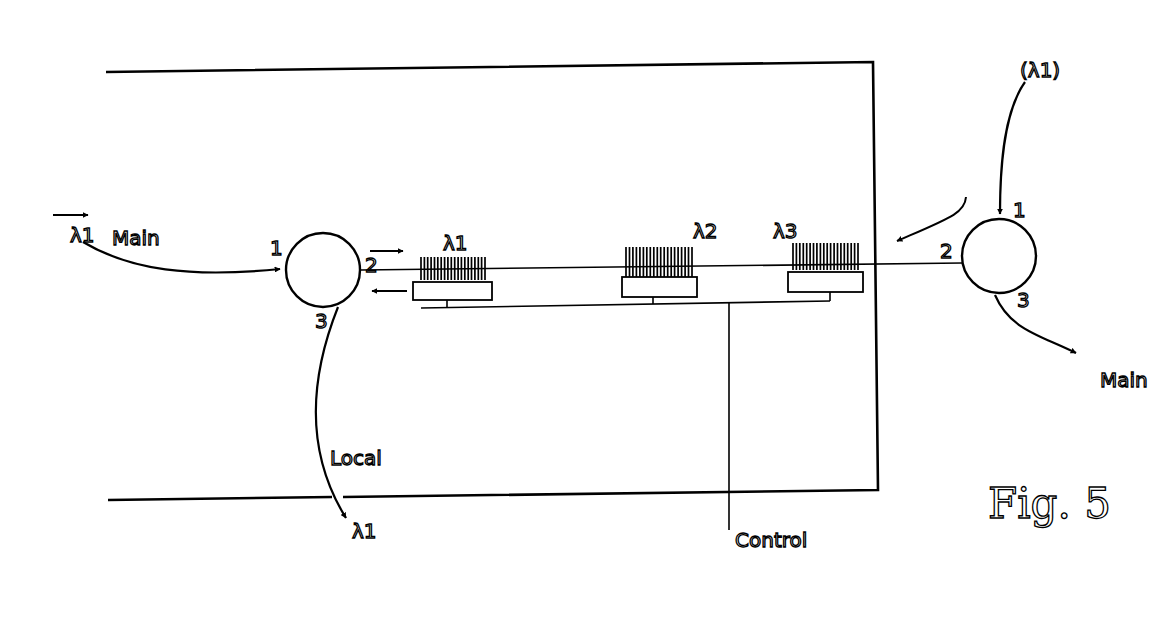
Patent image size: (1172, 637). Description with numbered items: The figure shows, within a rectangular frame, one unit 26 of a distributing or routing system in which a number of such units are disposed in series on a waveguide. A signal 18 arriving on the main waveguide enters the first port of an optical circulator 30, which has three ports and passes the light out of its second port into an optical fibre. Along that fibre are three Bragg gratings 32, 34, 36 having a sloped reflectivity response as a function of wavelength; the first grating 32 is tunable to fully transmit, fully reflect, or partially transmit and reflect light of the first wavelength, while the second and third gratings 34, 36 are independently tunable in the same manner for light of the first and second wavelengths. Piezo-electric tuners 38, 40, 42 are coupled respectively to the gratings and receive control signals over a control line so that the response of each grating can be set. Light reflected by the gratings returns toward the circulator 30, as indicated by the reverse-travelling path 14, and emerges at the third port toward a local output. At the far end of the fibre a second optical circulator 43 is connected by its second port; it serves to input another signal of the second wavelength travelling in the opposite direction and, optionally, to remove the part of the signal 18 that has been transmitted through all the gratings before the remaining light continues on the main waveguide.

The reflected optical signal path 14 is at (403, 290).
The signal 18 is at (187, 270).
The unit 26 is at (381, 70).
The optical circulator 30 is at (312, 233).
The Bragg grating 32 is at (465, 260).
The Bragg grating 34 is at (647, 248).
The Bragg grating 36 is at (798, 244).
The piezo-electric tuner 38 is at (492, 292).
The piezo-electric tuner 40 is at (697, 288).
The piezo-electric tuner 42 is at (863, 292).
The optical circulator 43 is at (1037, 250).